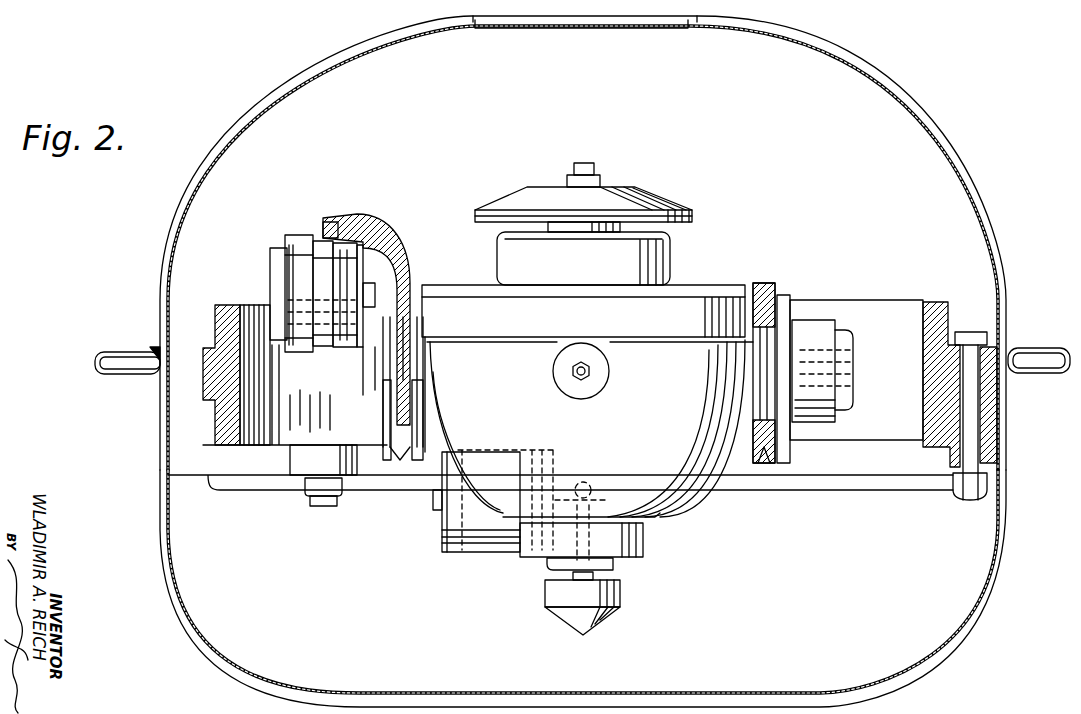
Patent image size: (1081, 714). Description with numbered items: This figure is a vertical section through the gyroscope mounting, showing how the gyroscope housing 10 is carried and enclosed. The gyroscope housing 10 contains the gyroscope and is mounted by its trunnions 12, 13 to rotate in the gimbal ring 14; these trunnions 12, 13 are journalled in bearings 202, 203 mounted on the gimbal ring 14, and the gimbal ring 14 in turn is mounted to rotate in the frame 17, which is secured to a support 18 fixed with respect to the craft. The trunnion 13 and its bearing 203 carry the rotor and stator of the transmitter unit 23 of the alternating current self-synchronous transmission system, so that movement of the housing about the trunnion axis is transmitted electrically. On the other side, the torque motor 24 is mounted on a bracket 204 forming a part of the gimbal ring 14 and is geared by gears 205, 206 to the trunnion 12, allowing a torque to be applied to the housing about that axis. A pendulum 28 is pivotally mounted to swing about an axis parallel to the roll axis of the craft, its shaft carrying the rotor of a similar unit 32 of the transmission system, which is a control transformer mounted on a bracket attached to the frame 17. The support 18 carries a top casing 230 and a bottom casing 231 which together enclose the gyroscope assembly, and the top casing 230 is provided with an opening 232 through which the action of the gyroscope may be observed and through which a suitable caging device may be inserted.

The gyroscope housing 10 is at (587, 361).
The trunnion 12 is at (403, 367).
The trunnion 13 is at (855, 348).
The gimbal ring 14 is at (766, 285).
The frame 17 is at (225, 305).
The support 18 is at (1045, 350).
The transmitting unit 23 is at (825, 356).
The torque motor 24 is at (297, 233).
The pendulum 28 is at (607, 600).
The unit of the transmission system 32 is at (483, 562).
The bearing 202 is at (420, 422).
The bearing 203 is at (793, 428).
The bracket 204 is at (388, 230).
The gear 205 is at (363, 272).
The gear 206 is at (363, 395).
The top casing 230 is at (953, 163).
The bottom casing 231 is at (993, 590).
The opening 232 is at (623, 30).